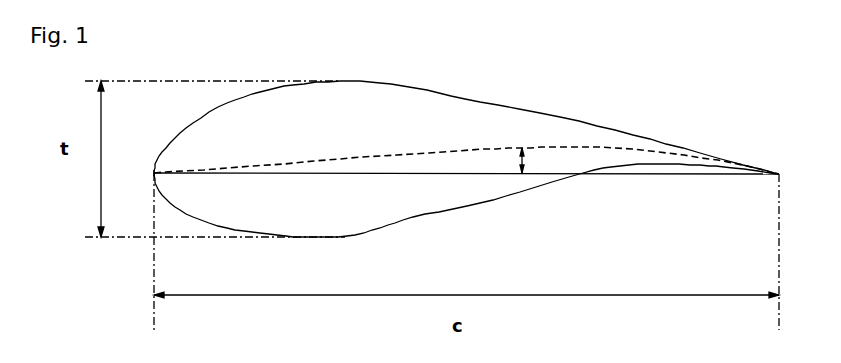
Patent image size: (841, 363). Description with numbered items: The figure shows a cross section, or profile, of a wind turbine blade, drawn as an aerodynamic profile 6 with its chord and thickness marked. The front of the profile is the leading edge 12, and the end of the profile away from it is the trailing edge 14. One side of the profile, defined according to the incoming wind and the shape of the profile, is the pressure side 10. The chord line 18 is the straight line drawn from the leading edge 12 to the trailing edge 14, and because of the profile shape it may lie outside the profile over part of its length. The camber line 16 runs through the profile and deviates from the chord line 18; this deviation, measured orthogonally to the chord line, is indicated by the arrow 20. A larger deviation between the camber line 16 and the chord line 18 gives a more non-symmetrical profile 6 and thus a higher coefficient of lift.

The aerodynamic profile 6 is at (605, 85).
The pressure side 10 is at (427, 88).
The leading edge 12 is at (154, 173).
The trailing edge 14 is at (779, 174).
The camber line 16 is at (552, 147).
The chord line 18 is at (487, 174).
The deviation between the camber line and the chord line 20 is at (533, 166).